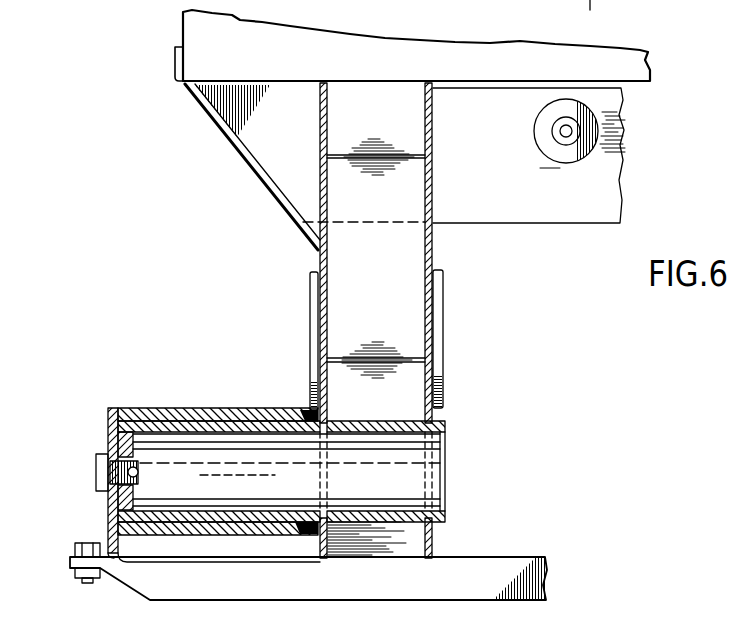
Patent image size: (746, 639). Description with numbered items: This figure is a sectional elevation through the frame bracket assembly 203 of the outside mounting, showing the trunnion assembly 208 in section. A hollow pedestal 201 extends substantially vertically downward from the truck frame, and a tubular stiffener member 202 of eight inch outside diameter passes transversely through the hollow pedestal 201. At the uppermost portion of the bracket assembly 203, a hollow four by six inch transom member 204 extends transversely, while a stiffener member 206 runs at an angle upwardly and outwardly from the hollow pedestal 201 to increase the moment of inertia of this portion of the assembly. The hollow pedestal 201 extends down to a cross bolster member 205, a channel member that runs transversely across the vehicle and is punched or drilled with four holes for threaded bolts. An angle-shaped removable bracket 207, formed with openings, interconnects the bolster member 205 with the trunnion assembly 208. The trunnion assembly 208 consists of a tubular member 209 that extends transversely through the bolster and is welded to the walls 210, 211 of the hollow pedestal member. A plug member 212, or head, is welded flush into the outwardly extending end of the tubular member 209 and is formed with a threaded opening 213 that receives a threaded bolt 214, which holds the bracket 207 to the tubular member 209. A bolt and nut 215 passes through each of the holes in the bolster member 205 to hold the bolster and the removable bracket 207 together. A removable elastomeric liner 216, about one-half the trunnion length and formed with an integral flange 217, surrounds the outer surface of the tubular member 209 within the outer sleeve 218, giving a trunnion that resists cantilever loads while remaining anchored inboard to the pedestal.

The hollow pedestal 201 is at (434, 251).
The tubular stiffener member 202 is at (445, 305).
The bracket assembly 203 is at (266, 227).
The transom member 204 is at (547, 214).
The cross bolster member 205 is at (367, 588).
The stiffener member 206 is at (222, 128).
The removable bracket 207 is at (109, 518).
The trunnion assembly 208 is at (200, 397).
The tubular member 209 is at (448, 428).
The wall 210 is at (428, 278).
The wall 211 is at (326, 318).
The plug member 212 is at (134, 501).
The threaded opening 213 is at (139, 472).
The threaded bolt 214 is at (96, 470).
The bolt and nut 215 is at (75, 546).
The removable liner 216 is at (270, 412).
The integral flange 217 is at (313, 535).
The outer sleeve 218 is at (160, 407).